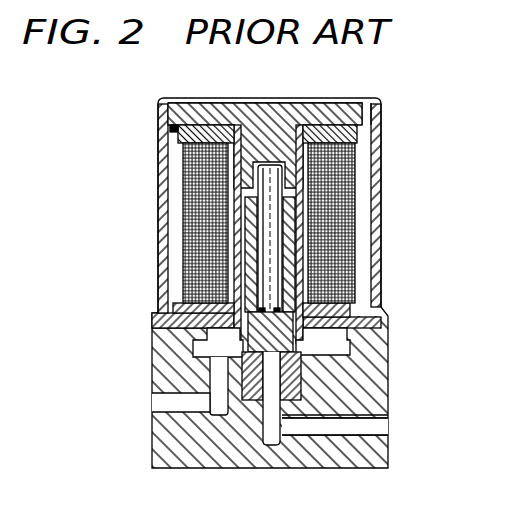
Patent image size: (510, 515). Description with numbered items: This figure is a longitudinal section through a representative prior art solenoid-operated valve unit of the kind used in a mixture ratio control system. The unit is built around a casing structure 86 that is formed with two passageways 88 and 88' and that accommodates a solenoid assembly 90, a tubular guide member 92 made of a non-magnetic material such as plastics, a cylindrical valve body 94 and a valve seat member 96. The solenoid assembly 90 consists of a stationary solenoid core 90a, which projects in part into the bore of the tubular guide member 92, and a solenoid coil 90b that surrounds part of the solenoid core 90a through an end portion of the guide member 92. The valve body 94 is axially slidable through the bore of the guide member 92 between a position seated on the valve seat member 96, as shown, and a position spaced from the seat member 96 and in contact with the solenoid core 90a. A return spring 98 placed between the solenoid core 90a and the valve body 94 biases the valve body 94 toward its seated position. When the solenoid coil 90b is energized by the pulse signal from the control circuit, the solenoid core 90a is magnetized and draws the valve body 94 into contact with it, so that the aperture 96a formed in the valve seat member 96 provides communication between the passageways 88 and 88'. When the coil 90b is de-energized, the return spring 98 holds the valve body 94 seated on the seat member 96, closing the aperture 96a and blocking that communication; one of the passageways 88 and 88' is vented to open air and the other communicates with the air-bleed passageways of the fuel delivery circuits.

The casing structure 86 is at (395, 353).
The passageway 88 is at (335, 459).
The passageway 88' is at (158, 419).
The solenoid assembly 90 is at (366, 163).
The solenoid core 90a is at (243, 110).
The solenoid coil 90b is at (355, 238).
The tubular guide member 92 is at (307, 122).
The valve body 94 is at (352, 293).
The valve seat member 96 is at (298, 388).
The aperture 96a is at (284, 408).
The return spring 98 is at (360, 195).